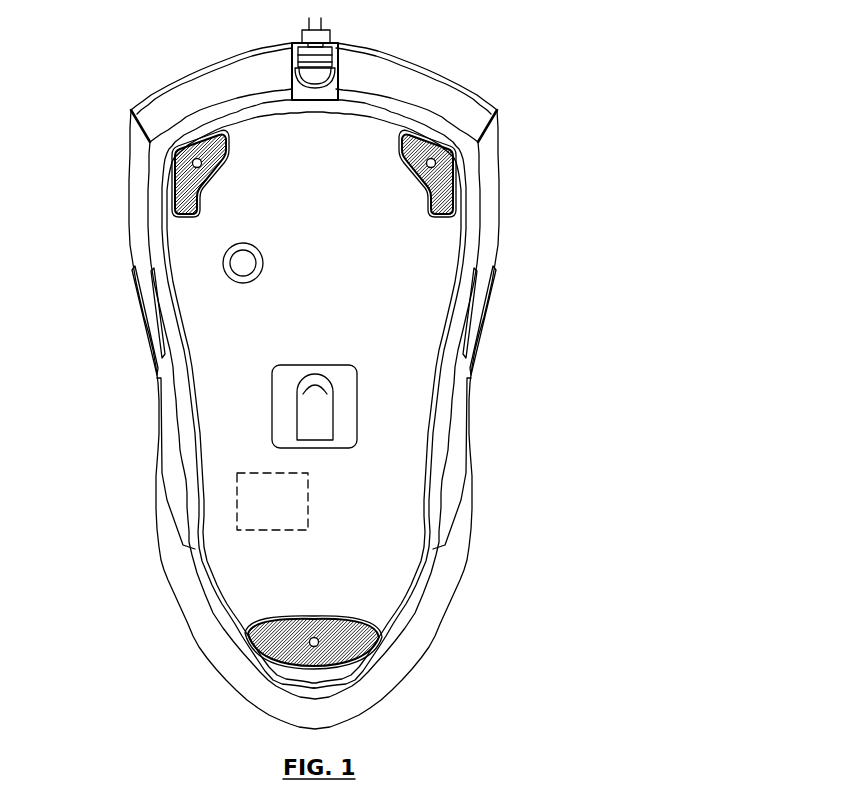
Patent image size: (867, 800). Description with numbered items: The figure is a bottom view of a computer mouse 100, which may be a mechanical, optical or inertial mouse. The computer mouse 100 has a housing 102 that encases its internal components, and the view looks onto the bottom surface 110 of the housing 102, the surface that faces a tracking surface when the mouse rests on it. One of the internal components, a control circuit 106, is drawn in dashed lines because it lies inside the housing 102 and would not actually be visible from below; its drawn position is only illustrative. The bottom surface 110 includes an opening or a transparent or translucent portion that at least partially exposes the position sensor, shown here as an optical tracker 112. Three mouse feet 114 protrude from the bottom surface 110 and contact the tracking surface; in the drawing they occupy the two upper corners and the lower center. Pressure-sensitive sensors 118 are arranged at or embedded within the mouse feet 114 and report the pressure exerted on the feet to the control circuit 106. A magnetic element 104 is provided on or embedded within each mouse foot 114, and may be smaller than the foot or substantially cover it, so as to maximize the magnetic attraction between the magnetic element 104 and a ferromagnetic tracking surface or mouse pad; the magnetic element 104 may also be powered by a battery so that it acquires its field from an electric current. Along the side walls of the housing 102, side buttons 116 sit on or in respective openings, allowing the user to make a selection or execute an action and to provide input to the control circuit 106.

The computer mouse 100 is at (643, 52).
The housing 102 is at (123, 143).
The magnetic element 104 is at (197, 187).
The control circuit 106 is at (237, 493).
The bottom surface 110 is at (447, 250).
The optical tracker 112 is at (316, 378).
The mouse foot 114 is at (458, 174).
The side button 116 is at (483, 325).
The pressure-sensitive sensor 118 is at (226, 156).